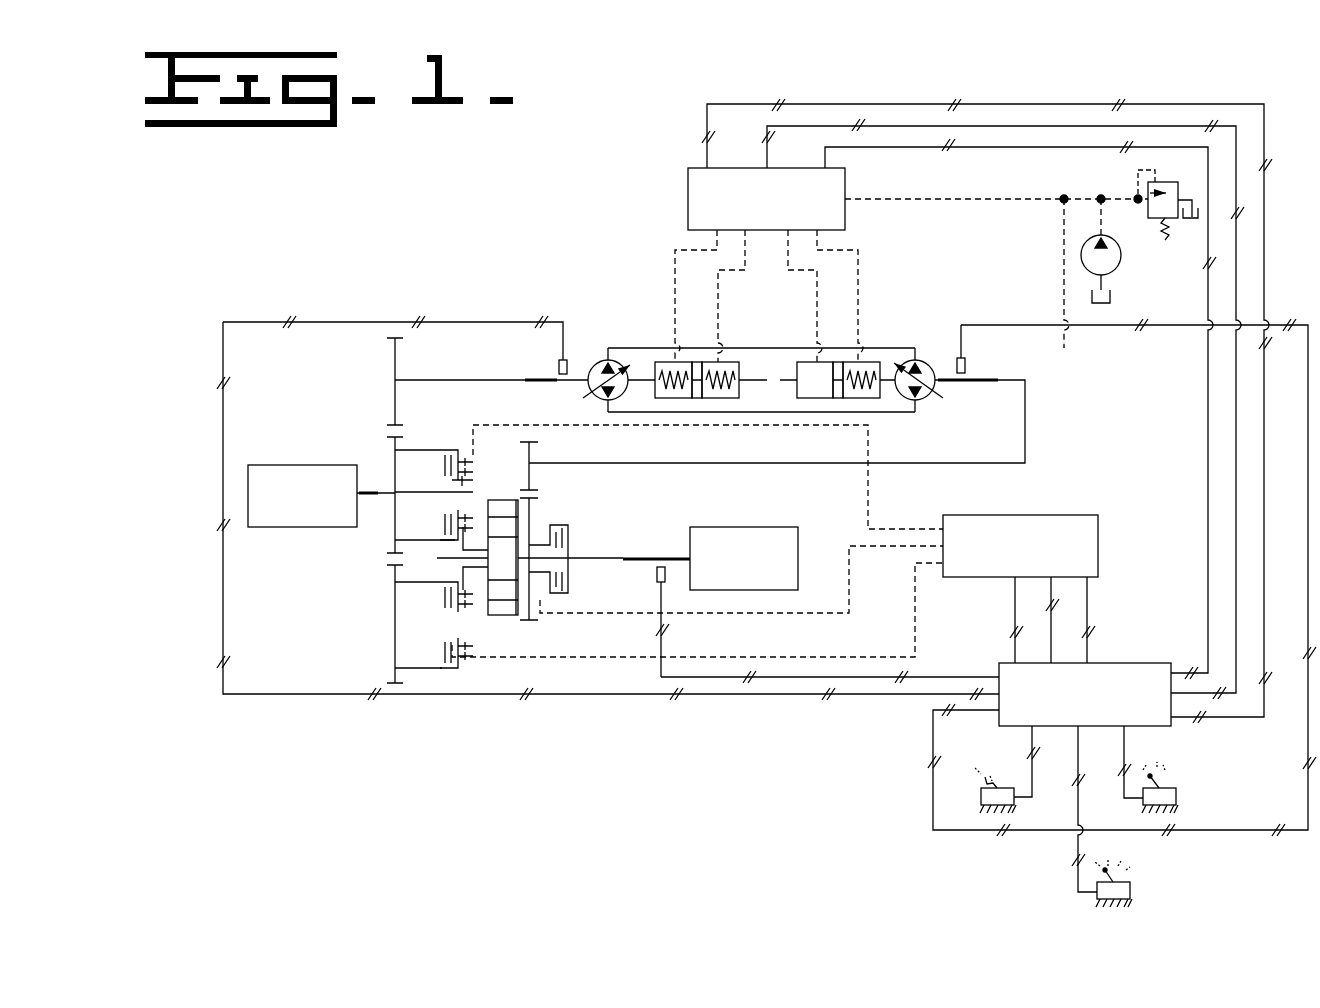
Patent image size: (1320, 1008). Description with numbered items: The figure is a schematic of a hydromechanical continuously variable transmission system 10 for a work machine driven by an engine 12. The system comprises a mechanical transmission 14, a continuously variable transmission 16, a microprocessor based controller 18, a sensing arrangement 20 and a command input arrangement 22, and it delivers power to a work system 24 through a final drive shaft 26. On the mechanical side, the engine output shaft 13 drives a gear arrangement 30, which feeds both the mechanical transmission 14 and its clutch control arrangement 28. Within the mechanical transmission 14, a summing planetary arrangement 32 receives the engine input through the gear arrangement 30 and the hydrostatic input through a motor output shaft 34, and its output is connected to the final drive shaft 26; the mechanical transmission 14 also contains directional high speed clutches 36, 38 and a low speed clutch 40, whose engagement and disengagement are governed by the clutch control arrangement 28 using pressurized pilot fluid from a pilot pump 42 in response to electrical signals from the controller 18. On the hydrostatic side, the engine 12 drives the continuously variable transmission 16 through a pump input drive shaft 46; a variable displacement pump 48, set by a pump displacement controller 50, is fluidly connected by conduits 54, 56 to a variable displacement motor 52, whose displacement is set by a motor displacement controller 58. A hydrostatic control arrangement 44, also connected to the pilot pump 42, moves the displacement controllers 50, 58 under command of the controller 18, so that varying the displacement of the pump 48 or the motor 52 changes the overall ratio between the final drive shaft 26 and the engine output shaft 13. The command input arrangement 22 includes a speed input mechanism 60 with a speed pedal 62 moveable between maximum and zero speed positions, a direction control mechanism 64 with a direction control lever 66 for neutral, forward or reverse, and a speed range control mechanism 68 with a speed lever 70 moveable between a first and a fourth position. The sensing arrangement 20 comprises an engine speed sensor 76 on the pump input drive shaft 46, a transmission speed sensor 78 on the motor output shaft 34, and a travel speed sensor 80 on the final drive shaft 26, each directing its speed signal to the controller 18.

The transmission system 10 is at (461, 229).
The engine 12 is at (302, 465).
The engine output shaft 13 is at (373, 492).
The mechanical transmission 14 is at (377, 620).
The continuously variable transmission 16 is at (629, 190).
The microprocessor based controller 18 is at (1120, 663).
The sensing arrangement 20 is at (834, 723).
The command input arrangement 22 is at (938, 867).
The work system 24 is at (730, 527).
The final drive shaft 26 is at (673, 557).
The clutch control arrangement 28 is at (1019, 503).
The gear arrangement 30 is at (361, 551).
The summing planetary arrangement 32 is at (500, 491).
The motor output shaft 34 is at (683, 463).
The directional high speed clutch 36 is at (452, 458).
The directional high speed clutch 38 is at (430, 670).
The low speed clutch 40 is at (555, 525).
The pilot pump 42 is at (1121, 255).
The hydrostatic control arrangement 44 is at (845, 185).
The pump input drive shaft 46 is at (458, 380).
The variable displacement pump 48 is at (593, 365).
The pump displacement controller 50 is at (648, 362).
The variable displacement motor 52 is at (935, 368).
The conduit 54 is at (740, 348).
The conduit 56 is at (893, 412).
The motor displacement controller 58 is at (870, 360).
The speed input mechanism 60 is at (946, 799).
The speed pedal 62 is at (997, 786).
The direction control mechanism 64 is at (1215, 796).
The direction control lever 66 is at (1157, 782).
The speed range control mechanism 68 is at (1191, 875).
The speed lever 70 is at (1115, 878).
The engine speed sensor 76 is at (557, 367).
The transmission speed sensor 78 is at (967, 366).
The travel speed sensor 80 is at (657, 576).